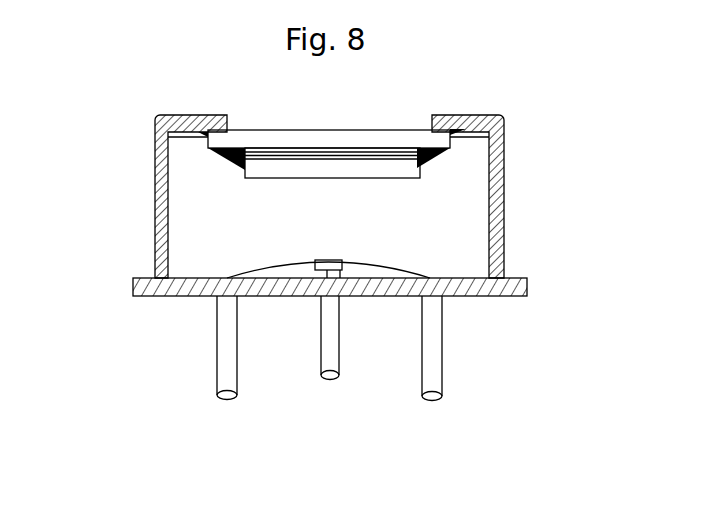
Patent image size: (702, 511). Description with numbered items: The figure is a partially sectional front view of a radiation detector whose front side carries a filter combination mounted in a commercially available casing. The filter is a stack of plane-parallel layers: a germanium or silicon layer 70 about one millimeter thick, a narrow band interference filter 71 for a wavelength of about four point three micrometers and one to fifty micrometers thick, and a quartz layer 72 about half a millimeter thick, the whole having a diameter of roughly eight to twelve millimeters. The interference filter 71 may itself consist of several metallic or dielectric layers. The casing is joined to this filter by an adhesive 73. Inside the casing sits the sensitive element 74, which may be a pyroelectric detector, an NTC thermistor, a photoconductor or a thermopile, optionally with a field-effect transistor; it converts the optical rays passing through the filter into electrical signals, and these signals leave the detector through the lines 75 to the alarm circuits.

The germanium layer 70 is at (455, 131).
The interference filter 71 is at (245, 178).
The quartz layer 72 is at (370, 171).
The adhesive 73 is at (200, 133).
The sensitive element 74 is at (341, 278).
The lines 75 is at (422, 393).